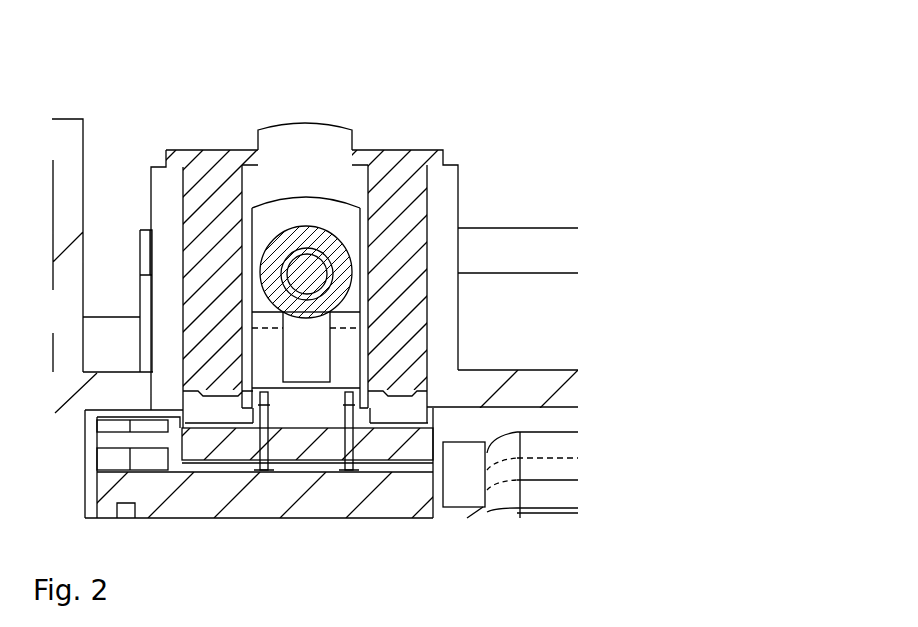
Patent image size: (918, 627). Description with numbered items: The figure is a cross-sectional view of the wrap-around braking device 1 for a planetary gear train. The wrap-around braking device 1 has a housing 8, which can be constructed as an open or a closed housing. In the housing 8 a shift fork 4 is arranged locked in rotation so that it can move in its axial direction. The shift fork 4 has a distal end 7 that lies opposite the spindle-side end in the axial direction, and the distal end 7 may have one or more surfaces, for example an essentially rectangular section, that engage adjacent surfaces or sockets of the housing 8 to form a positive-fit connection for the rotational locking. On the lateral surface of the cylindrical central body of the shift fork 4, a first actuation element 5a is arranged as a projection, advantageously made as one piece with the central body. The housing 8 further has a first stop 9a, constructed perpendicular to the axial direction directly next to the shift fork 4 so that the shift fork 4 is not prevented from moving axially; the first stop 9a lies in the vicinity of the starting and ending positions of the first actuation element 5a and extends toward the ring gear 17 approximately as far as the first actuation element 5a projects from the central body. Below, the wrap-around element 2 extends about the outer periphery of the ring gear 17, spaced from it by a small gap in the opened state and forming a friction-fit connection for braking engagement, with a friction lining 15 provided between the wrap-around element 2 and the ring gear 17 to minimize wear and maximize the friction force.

The wrap-around braking device 1 is at (529, 134).
The wrap-around element 2 is at (388, 447).
The shift fork 4 is at (305, 220).
The first actuation element 5a is at (307, 365).
The distal end 7 is at (348, 285).
The housing 8 is at (338, 153).
The first stop 9a is at (208, 263).
The friction lining 15 is at (238, 467).
The ring gear 17 is at (178, 493).